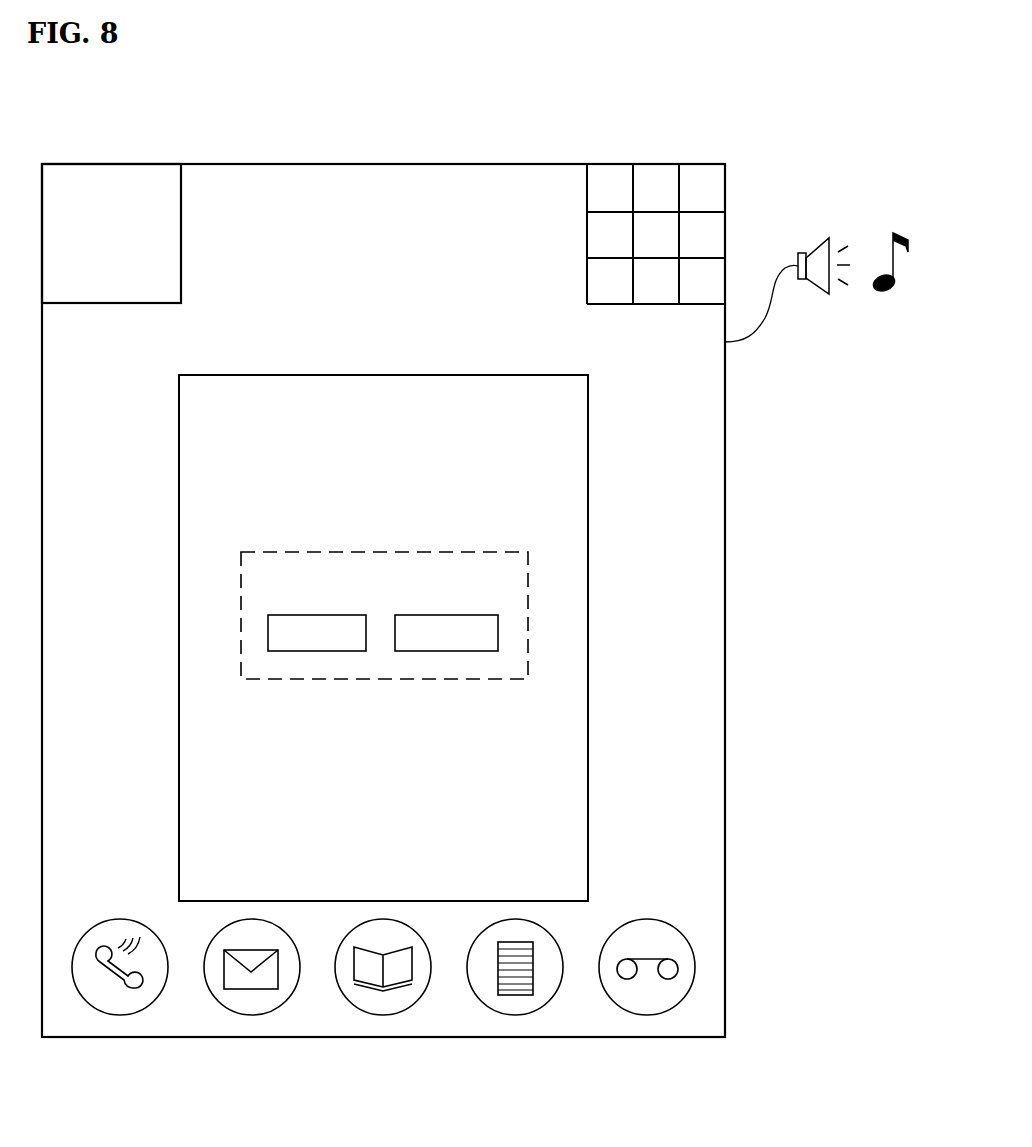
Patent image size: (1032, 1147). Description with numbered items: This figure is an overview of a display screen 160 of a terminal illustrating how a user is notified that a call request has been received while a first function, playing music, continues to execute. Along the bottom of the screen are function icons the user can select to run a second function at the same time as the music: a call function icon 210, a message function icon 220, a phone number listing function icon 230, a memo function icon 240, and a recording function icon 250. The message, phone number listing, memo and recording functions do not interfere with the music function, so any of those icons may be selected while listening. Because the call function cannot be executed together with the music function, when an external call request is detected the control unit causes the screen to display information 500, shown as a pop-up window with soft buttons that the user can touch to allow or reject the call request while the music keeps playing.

The display unit 160 is at (725, 760).
The information 500 is at (528, 592).
The call function icon 210 is at (118, 1015).
The message function icon 220 is at (250, 1015).
The phone number listing function icon 230 is at (381, 1015).
The memo function icon 240 is at (513, 1015).
The recording function icon 250 is at (645, 1015).